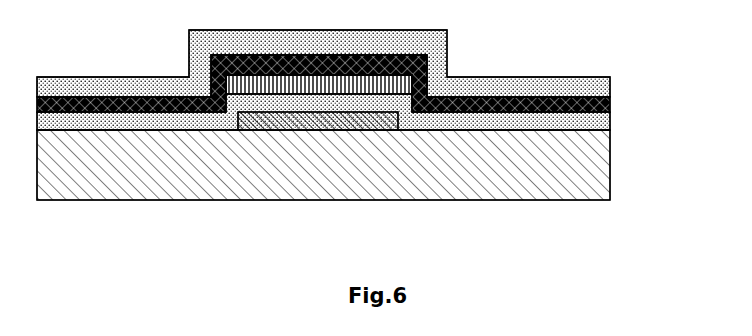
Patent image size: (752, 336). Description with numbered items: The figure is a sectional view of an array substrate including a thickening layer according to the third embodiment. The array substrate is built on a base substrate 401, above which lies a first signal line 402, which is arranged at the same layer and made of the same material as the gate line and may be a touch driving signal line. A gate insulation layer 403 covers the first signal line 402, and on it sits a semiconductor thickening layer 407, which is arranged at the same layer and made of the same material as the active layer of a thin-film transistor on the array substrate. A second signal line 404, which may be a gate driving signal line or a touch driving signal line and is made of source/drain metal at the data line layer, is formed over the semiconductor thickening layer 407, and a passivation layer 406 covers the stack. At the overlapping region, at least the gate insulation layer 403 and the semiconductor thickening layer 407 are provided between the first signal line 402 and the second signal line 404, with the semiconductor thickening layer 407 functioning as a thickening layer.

The base substrate 401 is at (602, 164).
The first signal line 402 is at (398, 118).
The gate insulation layer 403 is at (600, 120).
The second signal line 404 is at (611, 103).
The passivation layer 406 is at (596, 84).
The semiconductor thickening layer 407 is at (390, 83).